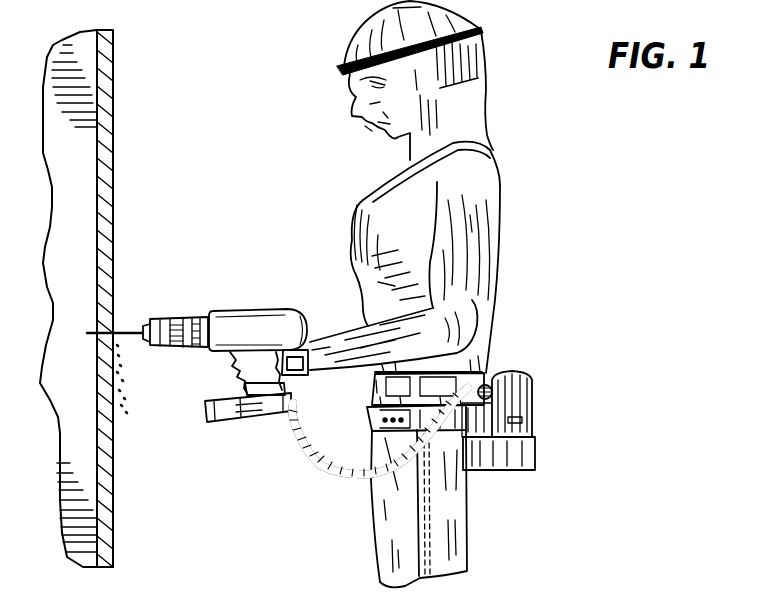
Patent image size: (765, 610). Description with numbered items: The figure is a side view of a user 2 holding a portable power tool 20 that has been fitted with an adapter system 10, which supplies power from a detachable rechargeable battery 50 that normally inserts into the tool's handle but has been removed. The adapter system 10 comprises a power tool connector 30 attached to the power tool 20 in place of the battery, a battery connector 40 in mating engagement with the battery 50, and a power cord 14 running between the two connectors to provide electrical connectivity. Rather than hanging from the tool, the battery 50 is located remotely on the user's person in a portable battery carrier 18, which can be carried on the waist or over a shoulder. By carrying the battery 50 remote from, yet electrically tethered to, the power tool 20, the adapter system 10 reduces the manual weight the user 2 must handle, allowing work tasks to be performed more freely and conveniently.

The user 2 is at (498, 178).
The adapter system 10 is at (298, 512).
The power cord 14 is at (312, 472).
The portable battery carrier 18 is at (505, 358).
The portable power tool 20 is at (256, 310).
The power tool connector 30 is at (240, 424).
The battery connector 40 is at (537, 403).
The detachable rechargeable battery 50 is at (512, 470).